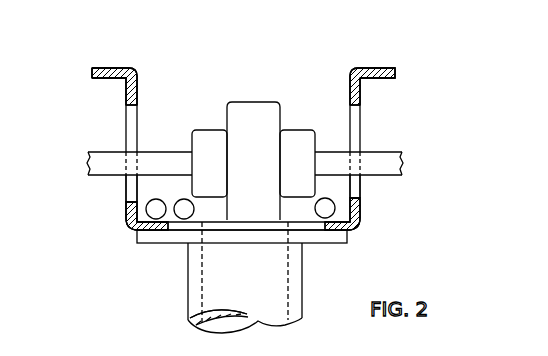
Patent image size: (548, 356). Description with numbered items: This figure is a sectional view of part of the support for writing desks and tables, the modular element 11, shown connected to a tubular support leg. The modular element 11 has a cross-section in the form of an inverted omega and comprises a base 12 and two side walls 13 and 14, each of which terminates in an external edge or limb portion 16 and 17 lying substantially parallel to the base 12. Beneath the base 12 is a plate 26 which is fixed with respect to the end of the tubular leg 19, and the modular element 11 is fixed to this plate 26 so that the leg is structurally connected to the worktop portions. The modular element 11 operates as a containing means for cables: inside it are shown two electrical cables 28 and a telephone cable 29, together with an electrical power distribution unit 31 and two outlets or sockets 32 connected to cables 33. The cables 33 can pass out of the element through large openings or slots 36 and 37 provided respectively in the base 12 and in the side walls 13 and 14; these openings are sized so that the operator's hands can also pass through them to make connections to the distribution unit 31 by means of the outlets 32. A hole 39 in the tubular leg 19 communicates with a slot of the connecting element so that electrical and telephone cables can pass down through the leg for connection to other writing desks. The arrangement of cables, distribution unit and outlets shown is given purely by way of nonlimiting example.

The modular element 11 is at (416, 121).
The base 12 is at (357, 230).
The side wall 13 is at (355, 95).
The side wall 14 is at (127, 88).
The external edge portion 16 is at (388, 77).
The external edge portion 17 is at (95, 77).
The tubular leg 19 is at (193, 295).
The plate 26 is at (153, 243).
The electrical cables 28 is at (185, 205).
The telephone cable 29 is at (142, 212).
The electrical power distribution unit 31 is at (254, 113).
The outlets or sockets 32 is at (212, 143).
The cables 33 is at (109, 157).
The opening or slot 36 is at (324, 230).
The opening or slot 37 is at (126, 190).
The hole 39 is at (222, 322).